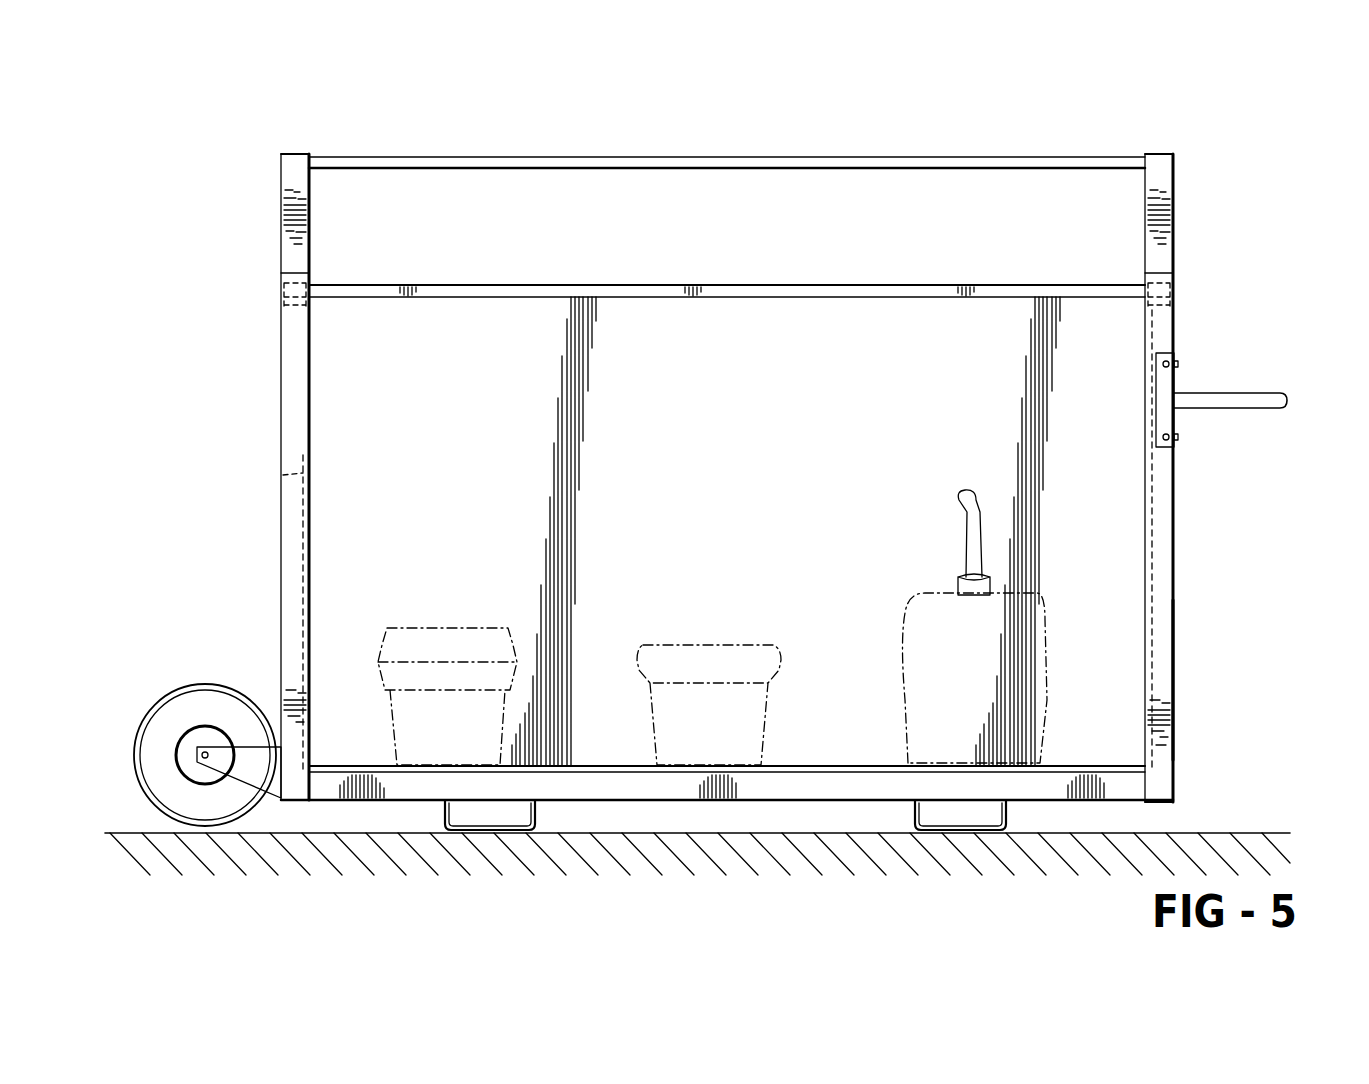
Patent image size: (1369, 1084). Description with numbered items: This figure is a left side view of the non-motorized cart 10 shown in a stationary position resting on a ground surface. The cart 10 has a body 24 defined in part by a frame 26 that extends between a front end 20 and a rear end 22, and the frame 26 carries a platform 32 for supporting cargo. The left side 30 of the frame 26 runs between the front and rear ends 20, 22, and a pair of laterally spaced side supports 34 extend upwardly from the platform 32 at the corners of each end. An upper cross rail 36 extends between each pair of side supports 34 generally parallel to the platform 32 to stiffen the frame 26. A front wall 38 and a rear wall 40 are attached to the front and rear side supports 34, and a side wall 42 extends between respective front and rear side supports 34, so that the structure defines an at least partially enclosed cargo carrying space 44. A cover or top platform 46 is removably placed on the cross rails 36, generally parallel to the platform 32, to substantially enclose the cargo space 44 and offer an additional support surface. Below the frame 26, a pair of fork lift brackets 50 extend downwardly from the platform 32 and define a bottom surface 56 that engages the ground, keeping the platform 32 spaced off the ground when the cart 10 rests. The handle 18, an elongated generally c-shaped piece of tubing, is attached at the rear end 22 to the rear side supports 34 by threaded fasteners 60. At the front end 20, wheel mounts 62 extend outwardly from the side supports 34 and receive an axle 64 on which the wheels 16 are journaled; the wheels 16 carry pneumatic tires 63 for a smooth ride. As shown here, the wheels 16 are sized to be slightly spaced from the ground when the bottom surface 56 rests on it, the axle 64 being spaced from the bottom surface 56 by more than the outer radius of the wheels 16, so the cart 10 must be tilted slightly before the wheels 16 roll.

The non-motorized cart 10 is at (928, 138).
The wheels 16 is at (210, 685).
The handle 18 is at (1287, 400).
The front end 20 is at (283, 415).
The rear end 22 is at (1175, 568).
The body 24 is at (1179, 684).
The frame 26 is at (1179, 800).
The left side 30 is at (293, 512).
The platform 32 is at (823, 765).
The side supports 34 is at (295, 162).
The upper cross rail 36 is at (283, 303).
The front wall 38 is at (283, 473).
The rear wall 40 is at (1152, 620).
The side wall 42 is at (745, 333).
The cargo carrying space 44 is at (360, 524).
The cover or top platform 46 is at (470, 285).
The fork lift brackets 50 is at (538, 805).
The bottom surface 56 is at (483, 830).
The threaded fasteners 60 is at (1177, 364).
The wheel mounts 62 is at (268, 783).
The pneumatic tires 63 is at (172, 720).
The axle 64 is at (197, 762).